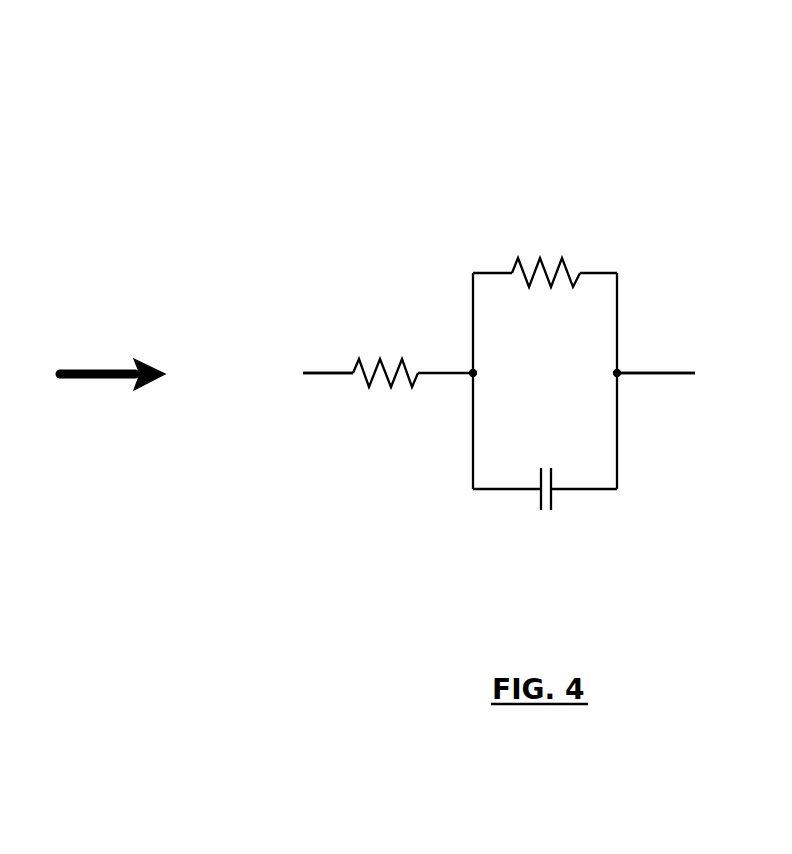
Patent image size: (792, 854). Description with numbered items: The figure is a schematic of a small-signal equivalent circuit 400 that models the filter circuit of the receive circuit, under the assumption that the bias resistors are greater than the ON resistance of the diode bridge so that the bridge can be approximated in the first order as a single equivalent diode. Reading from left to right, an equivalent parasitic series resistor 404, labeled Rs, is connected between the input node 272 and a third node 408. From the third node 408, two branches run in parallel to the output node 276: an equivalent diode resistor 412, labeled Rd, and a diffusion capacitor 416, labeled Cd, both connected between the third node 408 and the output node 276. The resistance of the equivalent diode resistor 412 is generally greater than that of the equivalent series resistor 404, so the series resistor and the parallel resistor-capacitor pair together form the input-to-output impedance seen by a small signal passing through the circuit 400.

The small-signal equivalent circuit 400 is at (535, 78).
The input node 272 is at (313, 374).
The equivalent series resistor 404 is at (359, 362).
The third node 408 is at (473, 376).
The equivalent diode resistor 412 is at (532, 286).
The diffusion capacitor 416 is at (541, 470).
The output node 276 is at (618, 374).